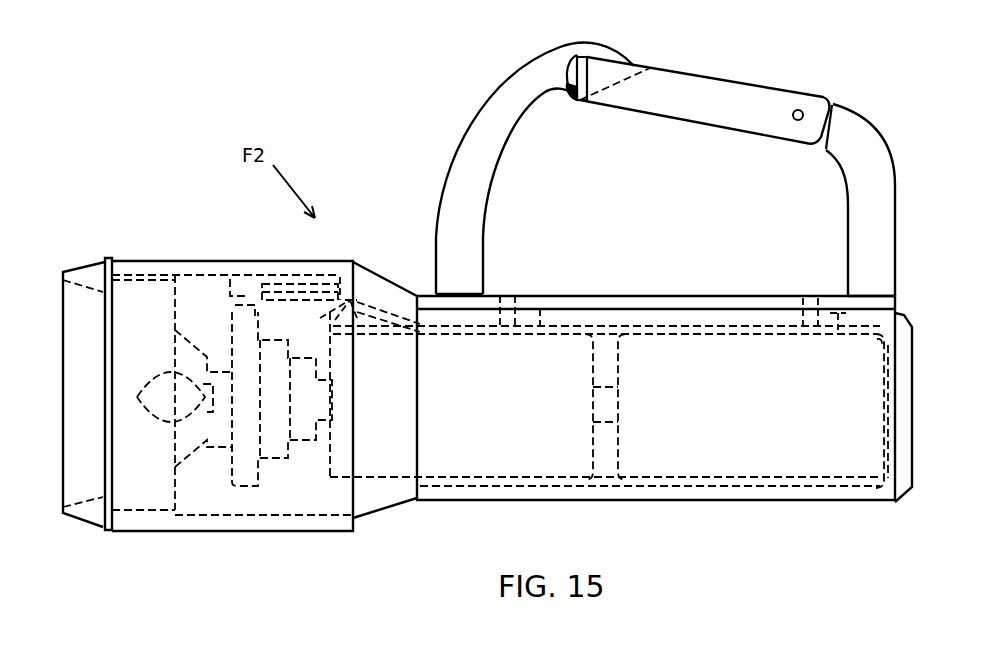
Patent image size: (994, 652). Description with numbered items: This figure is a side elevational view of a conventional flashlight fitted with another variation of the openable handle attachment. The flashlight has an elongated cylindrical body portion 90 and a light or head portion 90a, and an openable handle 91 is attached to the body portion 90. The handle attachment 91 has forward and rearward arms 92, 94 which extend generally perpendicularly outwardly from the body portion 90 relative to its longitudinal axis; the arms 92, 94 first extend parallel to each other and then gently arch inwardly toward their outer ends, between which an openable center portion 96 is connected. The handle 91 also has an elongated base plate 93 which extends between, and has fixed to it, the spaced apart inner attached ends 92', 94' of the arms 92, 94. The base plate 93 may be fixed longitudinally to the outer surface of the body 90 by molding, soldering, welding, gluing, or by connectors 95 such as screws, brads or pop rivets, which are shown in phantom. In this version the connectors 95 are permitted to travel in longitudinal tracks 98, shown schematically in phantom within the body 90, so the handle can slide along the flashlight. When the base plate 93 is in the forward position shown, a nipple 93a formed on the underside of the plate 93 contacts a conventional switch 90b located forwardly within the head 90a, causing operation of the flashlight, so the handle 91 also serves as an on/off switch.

The body portion 90 is at (774, 503).
The head portion 90a is at (265, 517).
The switch 90b is at (280, 270).
The openable handle attachment 91 is at (810, 72).
The forward arm 92 is at (535, 168).
The inner attached end of forward arm 92' is at (435, 251).
The base plate 93 is at (610, 307).
The nipple 93a is at (342, 270).
The rearward arm 94 is at (875, 196).
The inner attached end of rearward arm 94' is at (848, 270).
The connectors 95 is at (507, 298).
The openable center portion 96 is at (680, 87).
The longitudinal tracks 98 is at (533, 317).